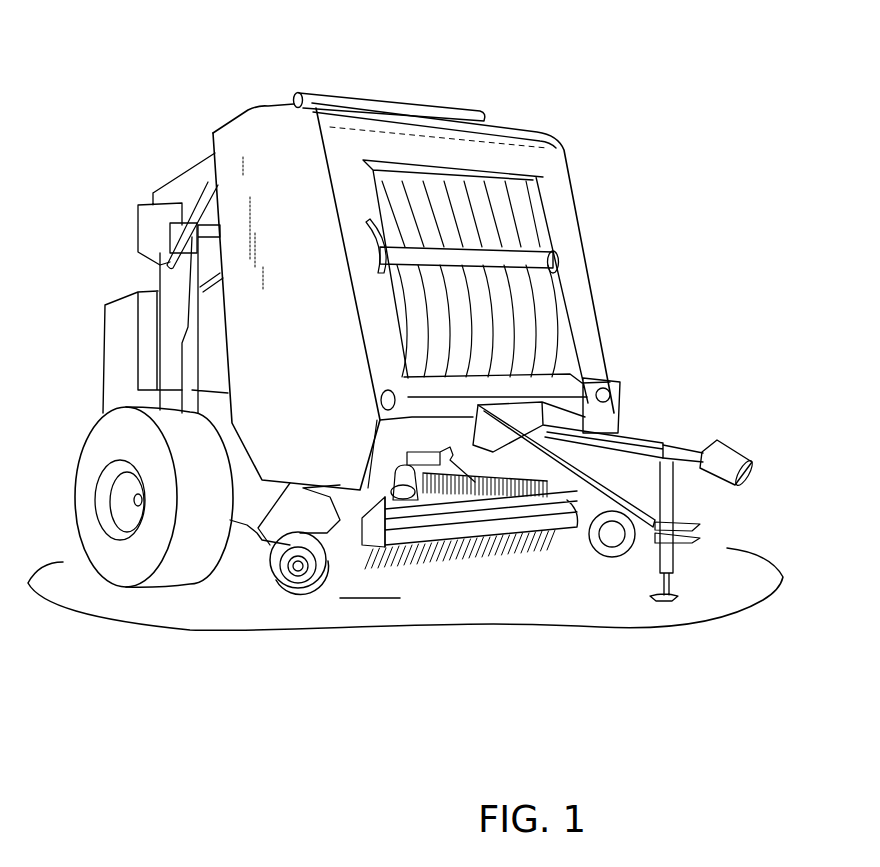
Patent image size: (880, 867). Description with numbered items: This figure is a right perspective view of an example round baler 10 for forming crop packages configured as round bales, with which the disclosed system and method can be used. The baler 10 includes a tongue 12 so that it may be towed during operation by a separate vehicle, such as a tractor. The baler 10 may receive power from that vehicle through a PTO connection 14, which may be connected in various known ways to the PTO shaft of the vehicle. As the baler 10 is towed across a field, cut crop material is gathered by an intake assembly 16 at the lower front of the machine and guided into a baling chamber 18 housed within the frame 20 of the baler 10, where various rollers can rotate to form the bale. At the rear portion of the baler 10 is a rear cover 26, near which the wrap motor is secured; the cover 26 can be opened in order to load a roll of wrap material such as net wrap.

The round baler 10 is at (700, 121).
The tongue 12 is at (640, 527).
The PTO connection 14 is at (650, 435).
The intake assembly 16 is at (481, 577).
The baling chamber 18 is at (277, 230).
The frame 20 is at (263, 106).
The rear cover 26 is at (103, 353).